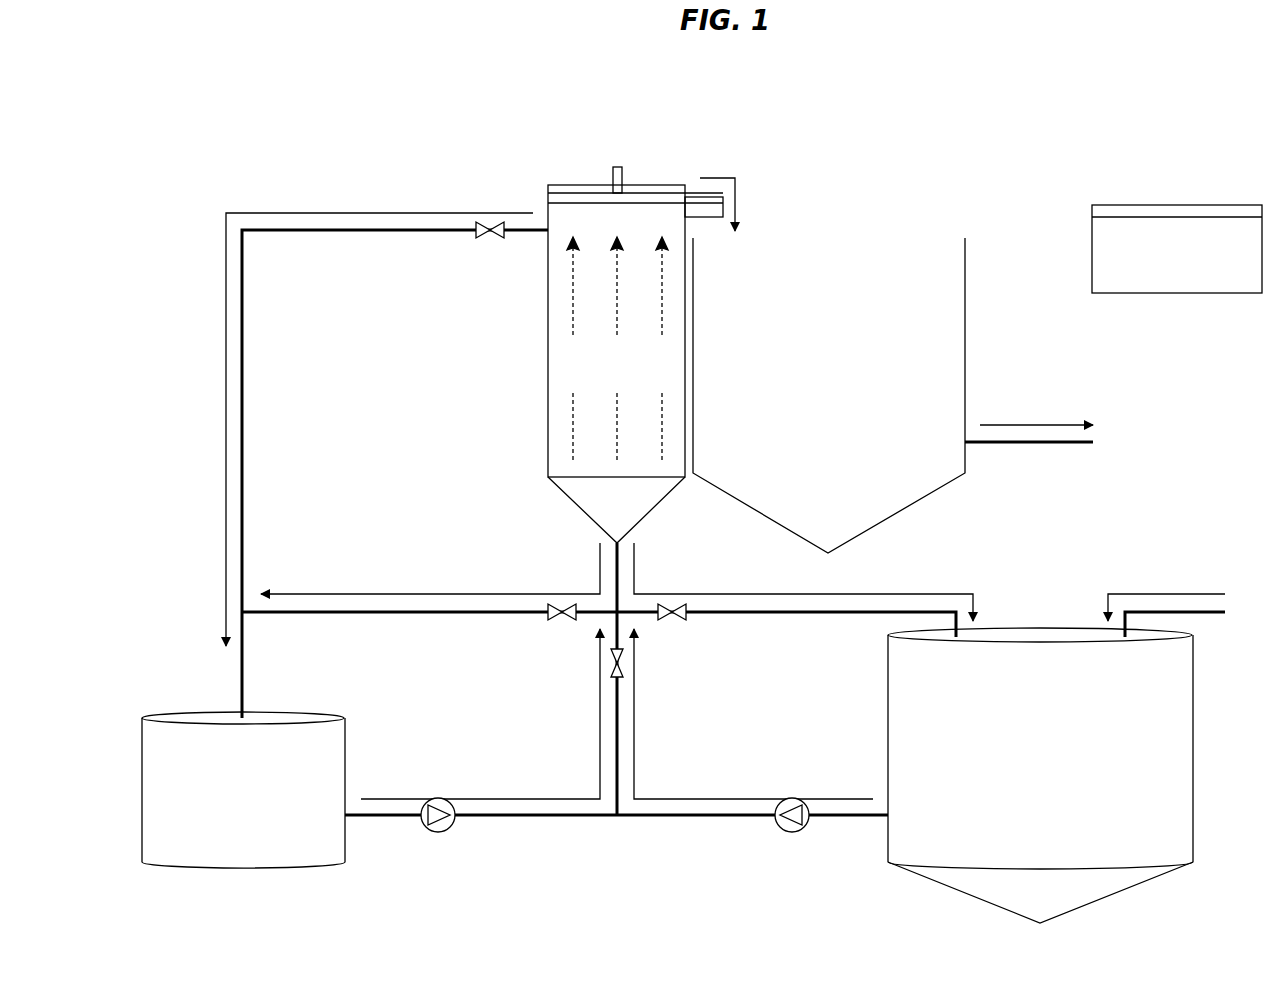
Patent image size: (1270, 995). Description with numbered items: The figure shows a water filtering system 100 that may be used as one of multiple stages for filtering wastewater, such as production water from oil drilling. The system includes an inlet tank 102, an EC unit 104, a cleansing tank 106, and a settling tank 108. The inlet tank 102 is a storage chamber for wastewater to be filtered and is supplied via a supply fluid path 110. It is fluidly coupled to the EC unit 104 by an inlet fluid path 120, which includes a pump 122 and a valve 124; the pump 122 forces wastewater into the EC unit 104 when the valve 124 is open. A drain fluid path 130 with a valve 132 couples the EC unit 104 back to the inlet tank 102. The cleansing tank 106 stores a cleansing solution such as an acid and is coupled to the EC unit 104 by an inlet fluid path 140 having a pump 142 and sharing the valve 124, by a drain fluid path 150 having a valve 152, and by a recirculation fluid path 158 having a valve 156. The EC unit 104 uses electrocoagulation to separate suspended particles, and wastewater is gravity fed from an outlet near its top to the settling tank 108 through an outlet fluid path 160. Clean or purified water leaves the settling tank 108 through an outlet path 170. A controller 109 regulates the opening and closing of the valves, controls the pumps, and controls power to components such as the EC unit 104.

The water filtering system 100 is at (1132, 127).
The inlet tank 102 is at (1040, 775).
The EC unit 104 is at (635, 355).
The cleansing tank 106 is at (243, 790).
The settling tank 108 is at (829, 395).
The controller 109 is at (1177, 249).
The supply fluid path 110 is at (1155, 594).
The inlet fluid path 120 is at (705, 799).
The pump 122 is at (793, 832).
The valve 124 is at (610, 659).
The drain fluid path 130 is at (903, 594).
The valve 132 is at (675, 622).
The inlet fluid path 140 is at (512, 799).
The pump 142 is at (447, 829).
The drain fluid path 150 is at (410, 594).
The valve 152 is at (558, 622).
The valve 156 is at (483, 242).
The recirculation fluid path 158 is at (410, 213).
The outlet fluid path 160 is at (738, 212).
The outlet path 170 is at (1052, 424).